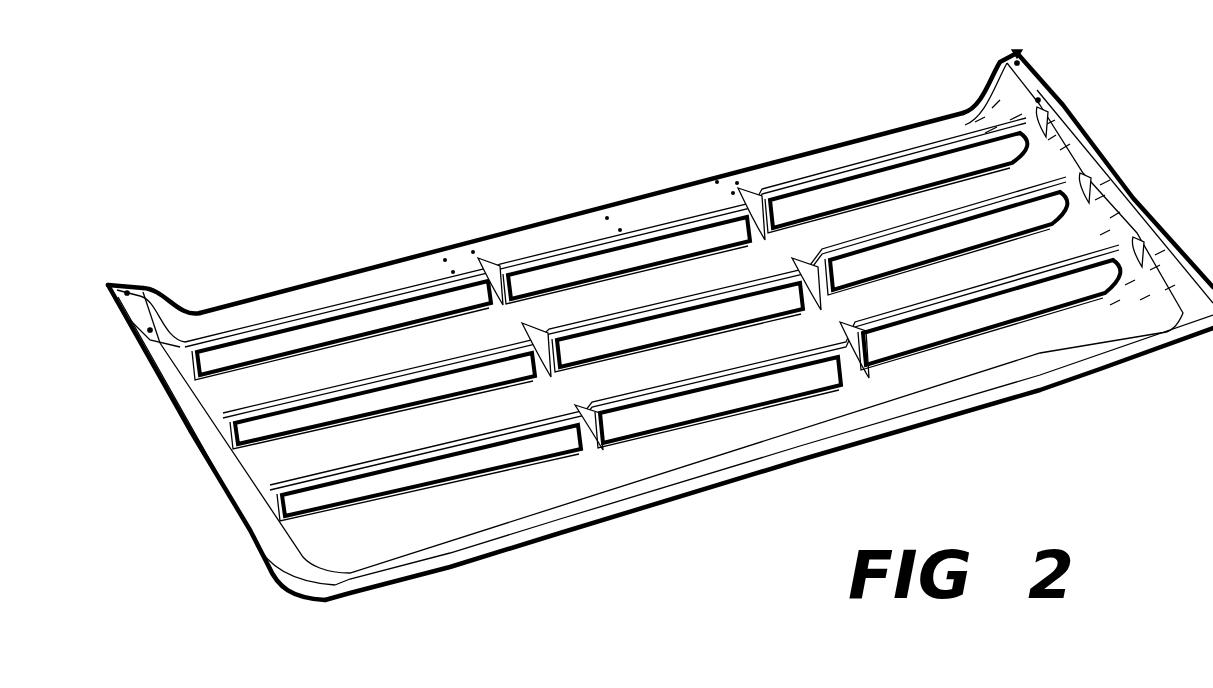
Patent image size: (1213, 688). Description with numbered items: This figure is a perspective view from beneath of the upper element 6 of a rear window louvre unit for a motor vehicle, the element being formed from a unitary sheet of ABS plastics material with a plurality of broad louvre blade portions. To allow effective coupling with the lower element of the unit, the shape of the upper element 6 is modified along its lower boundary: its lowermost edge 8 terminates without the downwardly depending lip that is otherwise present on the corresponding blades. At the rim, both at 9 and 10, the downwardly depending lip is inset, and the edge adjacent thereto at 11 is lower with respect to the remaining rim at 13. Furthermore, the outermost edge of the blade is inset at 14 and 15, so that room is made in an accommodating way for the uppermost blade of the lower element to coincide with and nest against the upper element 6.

The upper element 6 is at (708, 482).
The lowermost edge 8 is at (327, 286).
The rim 9 is at (122, 284).
The rim 10 is at (1014, 52).
The edge adjacent the rim 11 is at (138, 313).
The remaining rim 13 is at (203, 452).
The inset outermost edge of the blade 14 is at (173, 315).
The inset outermost edge of the blade 15 is at (1000, 92).